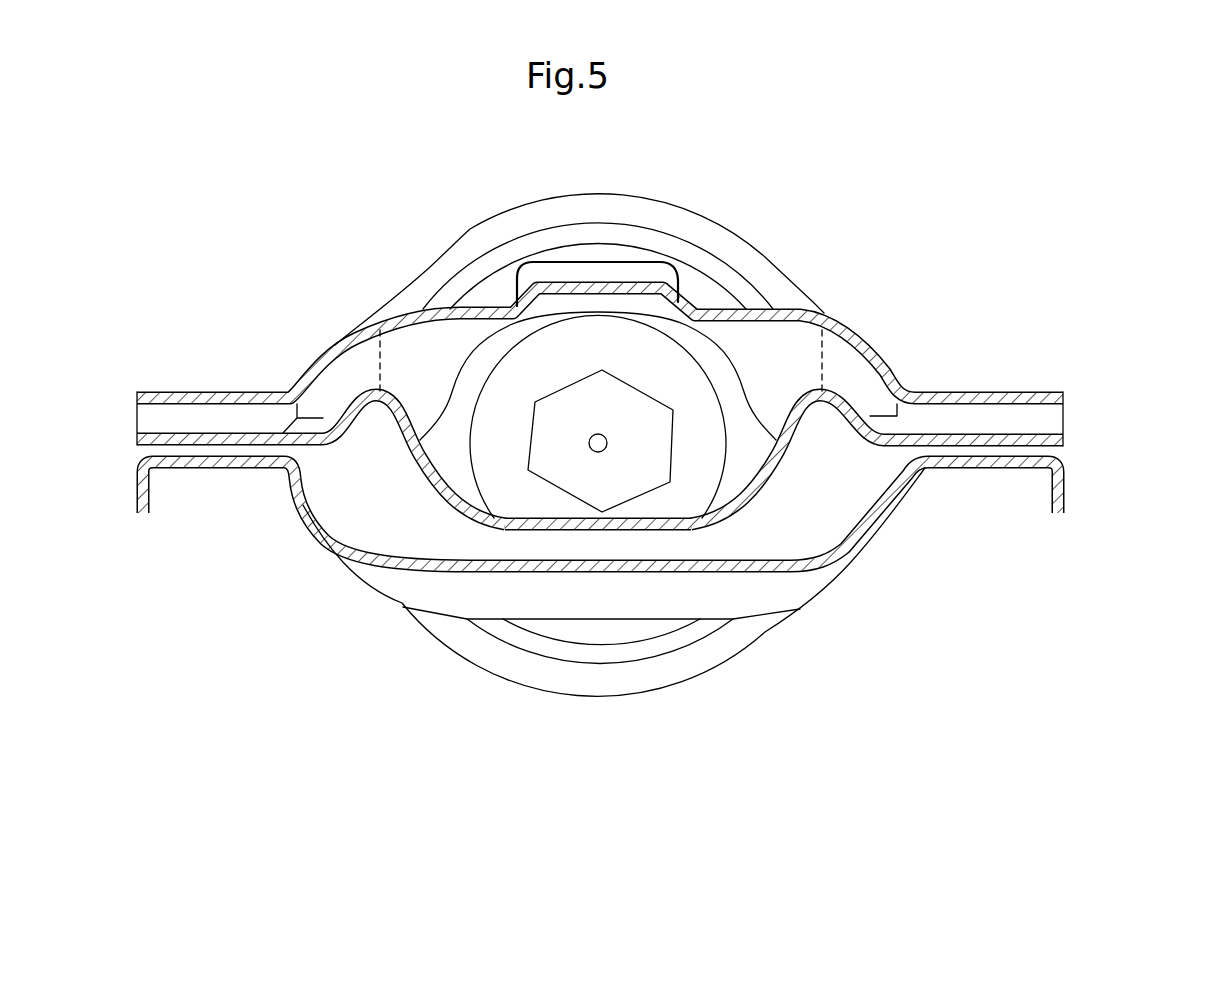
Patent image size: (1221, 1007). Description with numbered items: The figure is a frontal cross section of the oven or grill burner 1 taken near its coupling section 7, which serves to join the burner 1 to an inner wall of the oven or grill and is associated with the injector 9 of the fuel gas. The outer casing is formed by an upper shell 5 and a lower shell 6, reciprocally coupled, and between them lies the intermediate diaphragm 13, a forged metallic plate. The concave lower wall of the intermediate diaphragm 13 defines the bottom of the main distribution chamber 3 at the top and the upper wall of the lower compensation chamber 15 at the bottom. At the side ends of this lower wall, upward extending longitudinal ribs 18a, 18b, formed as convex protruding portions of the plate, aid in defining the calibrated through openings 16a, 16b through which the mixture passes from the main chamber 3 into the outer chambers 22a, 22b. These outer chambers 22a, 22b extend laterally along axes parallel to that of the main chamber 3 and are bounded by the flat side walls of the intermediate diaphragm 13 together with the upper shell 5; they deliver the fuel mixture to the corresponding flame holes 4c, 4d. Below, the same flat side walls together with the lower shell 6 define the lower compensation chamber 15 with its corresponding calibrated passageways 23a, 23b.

The burner 1 is at (674, 458).
The main distribution chamber 3 is at (703, 362).
The flame hole 4c is at (170, 418).
The flame hole 4d is at (1013, 420).
The upper shell 5 is at (815, 320).
The lower shell 6 is at (815, 562).
The coupling section 7 is at (613, 213).
The injector 9 is at (563, 412).
The intermediate diaphragm 13 is at (670, 523).
The lower compensation chamber 15 is at (528, 538).
The through opening 16a is at (828, 357).
The through opening 16b is at (388, 360).
The longitudinal rib 18a is at (827, 398).
The longitudinal rib 18b is at (378, 400).
The outer chamber 22a is at (860, 383).
The outer chamber 22b is at (354, 368).
The calibrated passageway 23a is at (1043, 450).
The calibrated passageway 23b is at (242, 450).